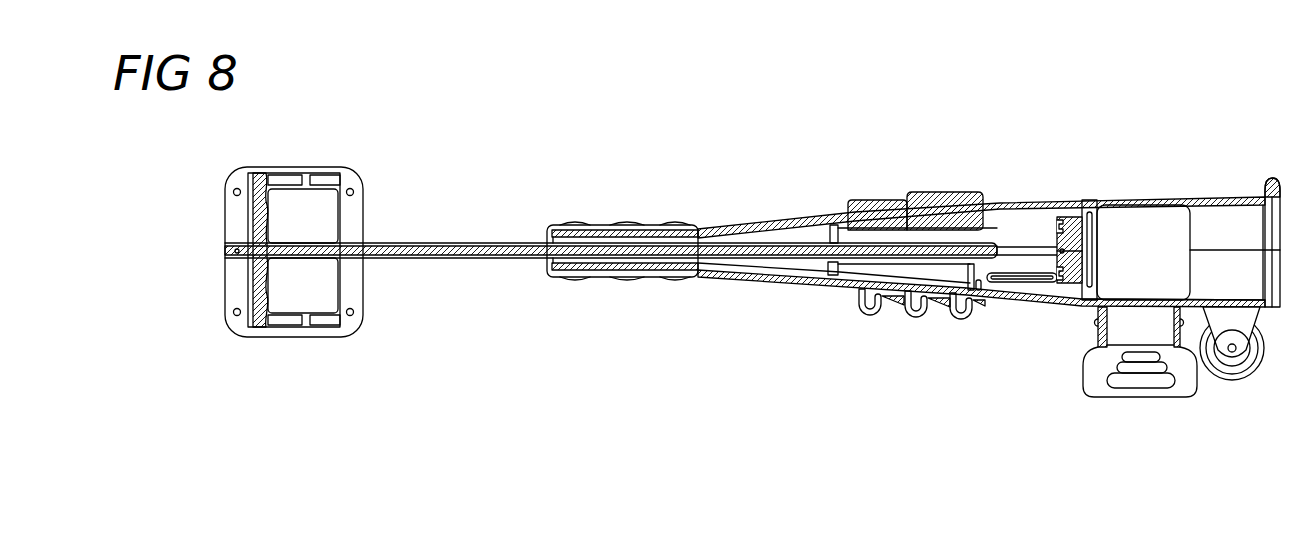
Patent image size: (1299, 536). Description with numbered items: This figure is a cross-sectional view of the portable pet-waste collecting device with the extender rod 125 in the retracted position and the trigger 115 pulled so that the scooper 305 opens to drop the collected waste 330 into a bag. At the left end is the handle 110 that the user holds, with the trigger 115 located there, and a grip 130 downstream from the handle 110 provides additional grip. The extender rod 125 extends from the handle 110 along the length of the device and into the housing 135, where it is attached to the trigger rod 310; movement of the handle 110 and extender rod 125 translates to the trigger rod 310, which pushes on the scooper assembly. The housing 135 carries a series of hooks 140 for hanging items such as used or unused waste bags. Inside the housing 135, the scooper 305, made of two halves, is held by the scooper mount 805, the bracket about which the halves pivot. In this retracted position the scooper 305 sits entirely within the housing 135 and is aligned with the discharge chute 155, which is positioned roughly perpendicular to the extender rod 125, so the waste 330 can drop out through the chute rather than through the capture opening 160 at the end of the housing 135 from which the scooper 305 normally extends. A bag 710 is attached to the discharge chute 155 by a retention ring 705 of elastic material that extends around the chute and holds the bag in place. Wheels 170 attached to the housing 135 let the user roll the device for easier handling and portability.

The handle 110 is at (223, 229).
The trigger 115 is at (262, 301).
The extender rod 125 is at (431, 243).
The trigger rod 310 is at (487, 243).
The grip 130 is at (617, 226).
The housing 135 is at (767, 226).
The hooks 140 is at (912, 318).
The scooper mount 805 is at (1062, 217).
The scooper 305 is at (1162, 267).
The capture opening 160 is at (1270, 178).
The retention ring 705 is at (1098, 325).
The bag 710 is at (1086, 375).
The waste 330 is at (1107, 388).
The wheels 170 is at (1262, 368).
The discharge chute 155 is at (1200, 393).